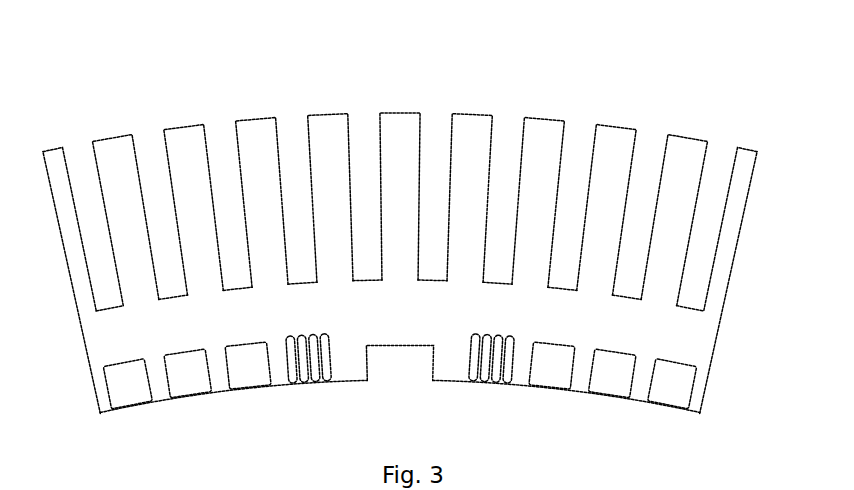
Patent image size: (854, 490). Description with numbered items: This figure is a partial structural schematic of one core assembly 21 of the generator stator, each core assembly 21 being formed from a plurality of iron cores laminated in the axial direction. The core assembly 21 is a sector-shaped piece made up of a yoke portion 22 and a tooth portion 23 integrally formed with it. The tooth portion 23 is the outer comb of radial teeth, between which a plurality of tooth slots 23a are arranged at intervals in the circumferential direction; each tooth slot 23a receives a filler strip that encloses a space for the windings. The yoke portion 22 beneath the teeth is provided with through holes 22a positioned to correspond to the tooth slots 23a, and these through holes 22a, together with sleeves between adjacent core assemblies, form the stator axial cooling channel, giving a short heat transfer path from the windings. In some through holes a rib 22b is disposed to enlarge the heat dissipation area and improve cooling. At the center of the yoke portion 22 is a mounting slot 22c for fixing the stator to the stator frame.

The core assembly 21 is at (400, 34).
The yoke portion 22 is at (700, 347).
The through holes 22a is at (247, 370).
The rib 22b is at (297, 378).
The mounting slot 22c is at (410, 348).
The tooth portion 23 is at (618, 137).
The tooth slots 23a is at (715, 163).